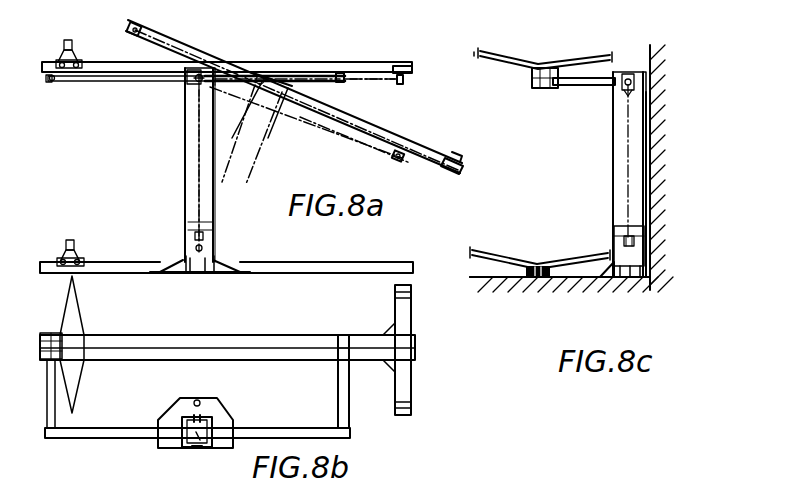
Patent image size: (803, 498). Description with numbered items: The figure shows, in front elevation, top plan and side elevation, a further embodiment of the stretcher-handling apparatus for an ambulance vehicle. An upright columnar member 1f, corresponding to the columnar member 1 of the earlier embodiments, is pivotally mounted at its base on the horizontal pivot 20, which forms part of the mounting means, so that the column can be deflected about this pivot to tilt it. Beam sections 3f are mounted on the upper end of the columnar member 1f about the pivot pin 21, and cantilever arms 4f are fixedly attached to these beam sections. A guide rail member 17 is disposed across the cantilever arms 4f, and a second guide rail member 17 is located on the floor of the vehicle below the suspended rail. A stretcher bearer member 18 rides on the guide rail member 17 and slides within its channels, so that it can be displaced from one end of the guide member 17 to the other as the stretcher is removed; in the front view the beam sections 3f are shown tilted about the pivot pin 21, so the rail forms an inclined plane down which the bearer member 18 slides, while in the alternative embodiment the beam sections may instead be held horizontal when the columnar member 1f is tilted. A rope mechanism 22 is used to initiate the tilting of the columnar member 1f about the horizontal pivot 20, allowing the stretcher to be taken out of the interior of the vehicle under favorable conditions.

In FIG. 8B, the columnar member 1 is at (203, 422).
In FIG. 8A, the columnar member 1f is at (187, 113).
In FIG. 8C, the columnar member 1f is at (614, 182).
In FIG. 8A, the beam sections 3f is at (310, 70).
In FIG. 8A, the cantilever arms 4f is at (128, 36).
In FIG. 8C, the cantilever arms 4f is at (587, 88).
In FIG. 8A, the guide rail member 17 is at (330, 66).
In FIG. 8B, the guide rail member 17 is at (282, 270).
In FIG. 8C, the guide rail member 17 is at (523, 286).
In FIG. 8A, the bearer member 18 is at (74, 44).
In FIG. 8B, the bearer member 18 is at (77, 254).
In FIG. 8C, the bearer member 18 is at (574, 58).
In FIG. 8A, the horizontal pivot 20 is at (210, 262).
In FIG. 8C, the horizontal pivot 20 is at (612, 250).
In FIG. 8A, the pivot pin 21 is at (206, 70).
In FIG. 8B, the pivot pin 21 is at (216, 430).
In FIG. 8C, the pivot pin 21 is at (628, 72).
In FIG. 8A, the rope mechanism 22 is at (186, 172).
In FIG. 8C, the rope mechanism 22 is at (612, 140).